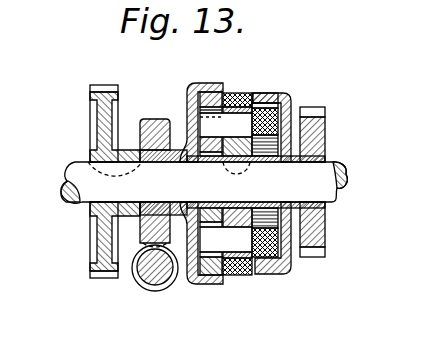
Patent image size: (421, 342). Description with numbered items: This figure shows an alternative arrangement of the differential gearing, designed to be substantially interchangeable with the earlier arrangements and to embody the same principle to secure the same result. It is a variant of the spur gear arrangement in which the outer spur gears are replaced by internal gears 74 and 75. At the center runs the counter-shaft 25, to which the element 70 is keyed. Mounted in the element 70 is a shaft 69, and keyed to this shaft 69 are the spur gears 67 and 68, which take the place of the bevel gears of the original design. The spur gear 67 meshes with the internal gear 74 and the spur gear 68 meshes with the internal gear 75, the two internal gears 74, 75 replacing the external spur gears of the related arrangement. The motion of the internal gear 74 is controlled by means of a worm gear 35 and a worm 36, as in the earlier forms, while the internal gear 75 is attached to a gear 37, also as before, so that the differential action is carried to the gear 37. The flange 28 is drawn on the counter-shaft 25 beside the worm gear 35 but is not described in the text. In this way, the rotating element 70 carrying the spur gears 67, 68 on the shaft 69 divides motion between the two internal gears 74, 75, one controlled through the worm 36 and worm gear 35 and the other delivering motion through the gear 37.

The counter-shaft 25 is at (66, 189).
The flange 28 is at (103, 128).
The worm gear 35 is at (148, 119).
The worm 36 is at (147, 281).
The gear 37 is at (318, 131).
The spur gear 67 is at (212, 96).
The spur gear 68 is at (301, 108).
The shaft 69 is at (227, 120).
The element 70 is at (250, 100).
The internal gear 74 is at (203, 84).
The internal gear 75 is at (274, 93).